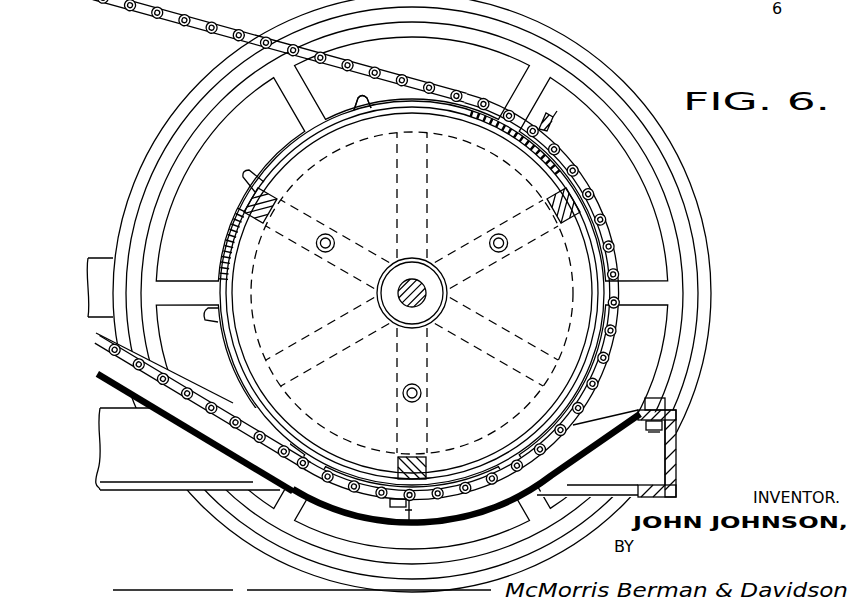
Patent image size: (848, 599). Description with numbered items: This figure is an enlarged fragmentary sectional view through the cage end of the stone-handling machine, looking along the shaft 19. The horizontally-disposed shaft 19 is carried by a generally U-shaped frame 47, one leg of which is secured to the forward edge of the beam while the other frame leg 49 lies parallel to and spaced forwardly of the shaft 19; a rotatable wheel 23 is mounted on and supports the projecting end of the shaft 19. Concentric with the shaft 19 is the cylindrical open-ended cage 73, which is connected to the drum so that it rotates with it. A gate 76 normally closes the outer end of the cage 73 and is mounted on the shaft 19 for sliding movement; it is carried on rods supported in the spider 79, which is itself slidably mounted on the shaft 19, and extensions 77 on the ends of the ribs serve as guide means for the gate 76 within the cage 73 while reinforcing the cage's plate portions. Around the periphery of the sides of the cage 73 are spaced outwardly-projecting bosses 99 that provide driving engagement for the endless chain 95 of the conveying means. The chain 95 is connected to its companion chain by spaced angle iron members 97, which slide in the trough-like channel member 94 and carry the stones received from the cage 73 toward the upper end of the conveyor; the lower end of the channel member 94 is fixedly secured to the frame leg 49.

The shaft 19 is at (418, 283).
The rotatable wheel 23 is at (711, 267).
The U-shaped frame 47 is at (681, 477).
The frame leg 49 is at (677, 443).
The cage 73 is at (539, 157).
The gate 76 is at (578, 258).
The extensions 77 is at (557, 228).
The spider 79 is at (436, 180).
The channel member 94 is at (197, 438).
The endless chain 95 is at (405, 78).
The angle iron members 97 is at (550, 126).
The bosses 99 is at (358, 100).